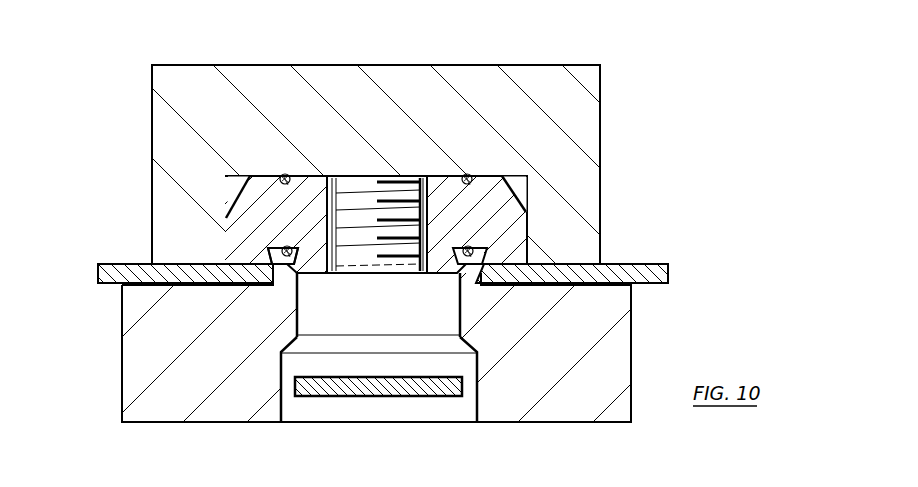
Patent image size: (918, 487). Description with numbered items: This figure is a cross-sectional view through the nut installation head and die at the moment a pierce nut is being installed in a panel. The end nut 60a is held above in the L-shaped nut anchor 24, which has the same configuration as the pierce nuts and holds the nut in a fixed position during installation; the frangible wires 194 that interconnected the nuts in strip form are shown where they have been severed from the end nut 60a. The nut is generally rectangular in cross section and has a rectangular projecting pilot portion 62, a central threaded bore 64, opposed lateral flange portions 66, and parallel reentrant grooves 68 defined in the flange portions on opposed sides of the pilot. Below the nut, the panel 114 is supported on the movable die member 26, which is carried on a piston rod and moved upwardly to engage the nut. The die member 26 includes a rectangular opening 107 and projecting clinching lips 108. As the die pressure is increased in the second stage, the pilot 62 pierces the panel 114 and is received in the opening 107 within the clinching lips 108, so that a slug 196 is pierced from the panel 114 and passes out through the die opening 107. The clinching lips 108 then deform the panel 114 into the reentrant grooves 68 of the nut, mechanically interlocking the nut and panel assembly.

The nut anchor 24 is at (553, 73).
The die member 26 is at (620, 338).
The end nut 60a is at (512, 218).
The pilot portion 62 is at (445, 265).
The central threaded bore 64 is at (333, 262).
The lateral flange portions 66 is at (265, 258).
The reentrant grooves 68 is at (290, 245).
The rectangular opening 107 is at (283, 410).
The clinching lips 108 is at (290, 278).
The panel 114 is at (648, 262).
The frangible wires 194 is at (283, 172).
The slug 196 is at (430, 388).